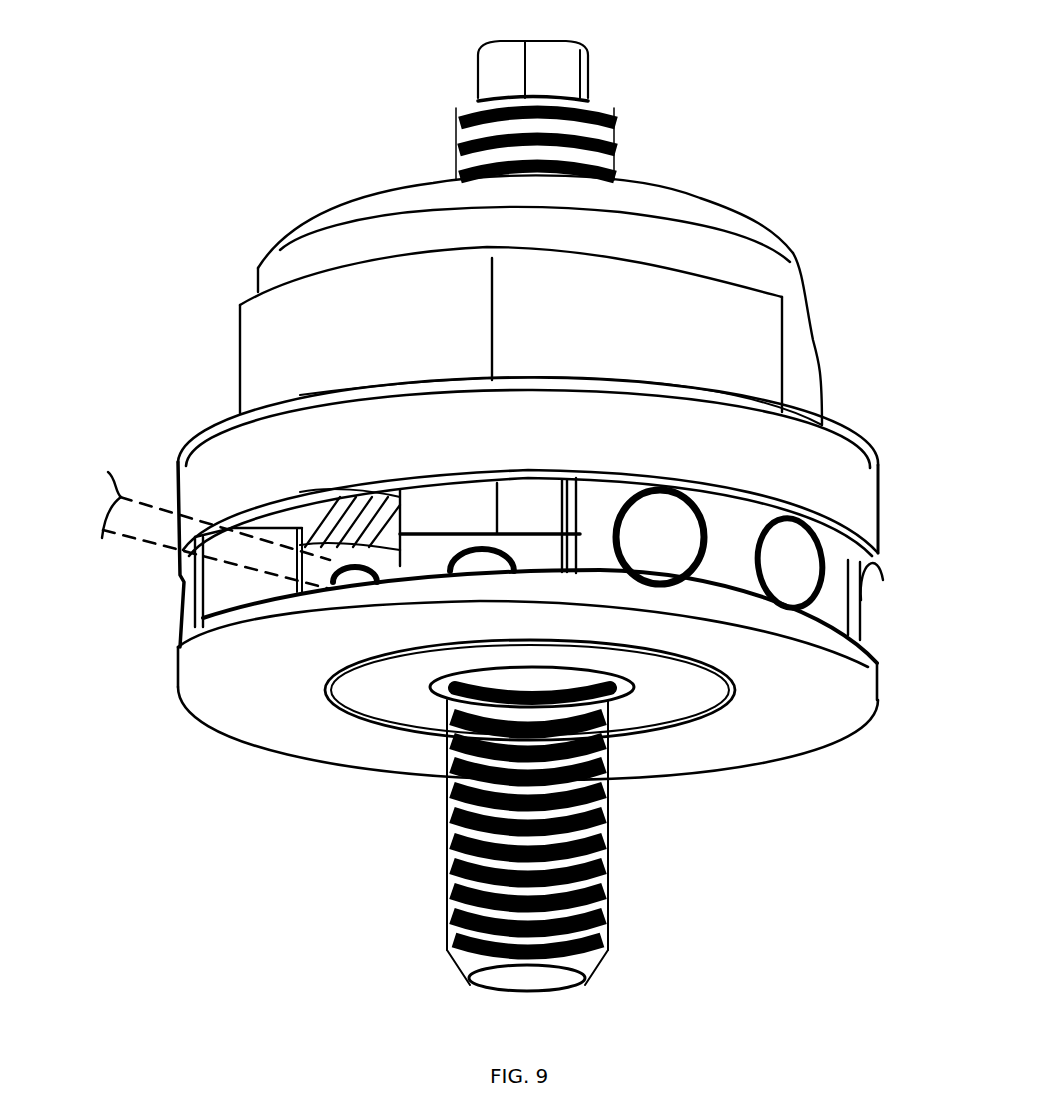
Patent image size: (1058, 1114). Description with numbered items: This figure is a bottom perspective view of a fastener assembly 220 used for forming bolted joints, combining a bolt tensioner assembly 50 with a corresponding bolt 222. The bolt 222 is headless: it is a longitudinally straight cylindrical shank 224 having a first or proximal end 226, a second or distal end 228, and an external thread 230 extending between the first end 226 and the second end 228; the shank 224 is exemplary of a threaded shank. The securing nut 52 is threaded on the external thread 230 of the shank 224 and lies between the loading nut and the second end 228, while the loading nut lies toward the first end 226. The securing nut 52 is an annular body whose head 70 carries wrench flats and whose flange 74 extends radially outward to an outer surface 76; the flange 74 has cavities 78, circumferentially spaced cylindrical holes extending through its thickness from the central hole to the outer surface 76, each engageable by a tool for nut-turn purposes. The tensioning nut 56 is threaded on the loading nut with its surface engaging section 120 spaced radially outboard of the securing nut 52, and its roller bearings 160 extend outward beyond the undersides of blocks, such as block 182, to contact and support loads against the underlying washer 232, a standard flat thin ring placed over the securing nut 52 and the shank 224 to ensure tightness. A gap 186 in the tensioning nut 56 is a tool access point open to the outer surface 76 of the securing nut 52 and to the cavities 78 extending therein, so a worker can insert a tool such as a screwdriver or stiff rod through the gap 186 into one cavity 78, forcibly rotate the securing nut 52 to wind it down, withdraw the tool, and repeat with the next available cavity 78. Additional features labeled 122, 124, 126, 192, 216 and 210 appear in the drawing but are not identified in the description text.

The first end 226 is at (588, 62).
The fastener assembly 220 is at (860, 156).
The cap 122 is at (733, 212).
The tensioning nut 56 is at (814, 262).
The body 126 is at (695, 337).
The body flange 124 is at (826, 382).
The bolt tensioner assembly 50 is at (876, 424).
The side wall 216 is at (880, 462).
The head 70 is at (388, 500).
The gap 186 is at (423, 545).
The securing nut 52 is at (473, 492).
The cavities 78 is at (490, 562).
The support 192 is at (600, 471).
The roller bearings 160 is at (690, 507).
The flange 74 is at (562, 540).
The axis 210 is at (133, 537).
The block 182 is at (175, 580).
The outer surface 76 is at (400, 568).
The surface engaging section 120 is at (840, 637).
The washer 232 is at (862, 728).
The bolt 222 is at (612, 877).
The shank 224 is at (607, 922).
The external thread 230 is at (447, 900).
The second end 228 is at (558, 975).